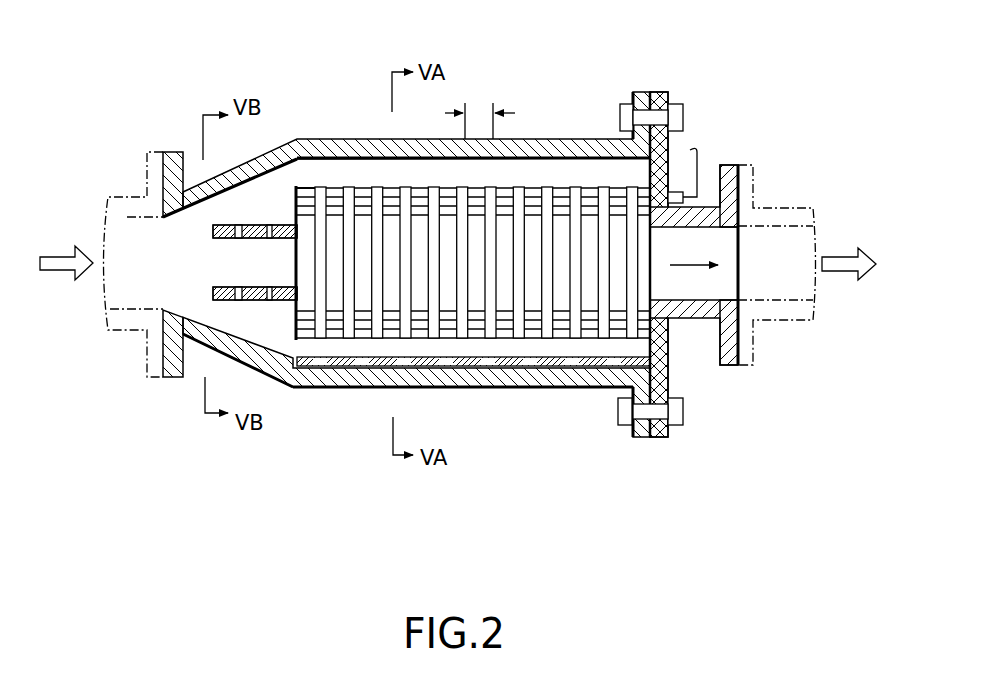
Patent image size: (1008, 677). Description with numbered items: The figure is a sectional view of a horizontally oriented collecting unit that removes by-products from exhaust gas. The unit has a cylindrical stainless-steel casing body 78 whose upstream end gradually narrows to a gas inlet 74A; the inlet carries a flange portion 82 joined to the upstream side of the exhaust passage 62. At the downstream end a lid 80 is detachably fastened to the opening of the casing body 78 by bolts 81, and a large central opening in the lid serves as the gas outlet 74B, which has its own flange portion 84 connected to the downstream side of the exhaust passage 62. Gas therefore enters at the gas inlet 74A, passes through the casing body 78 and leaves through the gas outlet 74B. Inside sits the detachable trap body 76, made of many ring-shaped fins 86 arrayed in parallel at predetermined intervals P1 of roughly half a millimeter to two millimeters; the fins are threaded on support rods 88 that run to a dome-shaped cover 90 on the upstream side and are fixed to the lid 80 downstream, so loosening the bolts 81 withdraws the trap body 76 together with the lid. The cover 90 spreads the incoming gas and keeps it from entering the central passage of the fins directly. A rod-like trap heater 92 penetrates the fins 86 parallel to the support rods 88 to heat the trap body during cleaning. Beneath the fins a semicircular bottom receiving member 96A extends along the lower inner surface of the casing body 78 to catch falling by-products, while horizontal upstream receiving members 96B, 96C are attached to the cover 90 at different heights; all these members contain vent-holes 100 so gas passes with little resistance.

The exhaust passage 62 is at (118, 330).
The gas inlet 74A is at (158, 262).
The gas outlet 74B is at (744, 258).
The trap body 76 is at (380, 170).
The casing body 78 is at (529, 139).
The lid 80 is at (650, 168).
The bolts 81 is at (673, 109).
The flange portion 82 is at (177, 377).
The flange portion 84 is at (730, 367).
The fins 86 is at (348, 340).
The support rods 88 is at (335, 205).
The cover 90 is at (240, 303).
The trap heater 92 is at (306, 184).
The bottom receiving member 96A is at (472, 368).
The upstream receiving member 96B is at (222, 224).
The upstream receiving member 96C is at (222, 302).
The vent-holes 100 is at (240, 224).
The intervals P1 is at (478, 108).